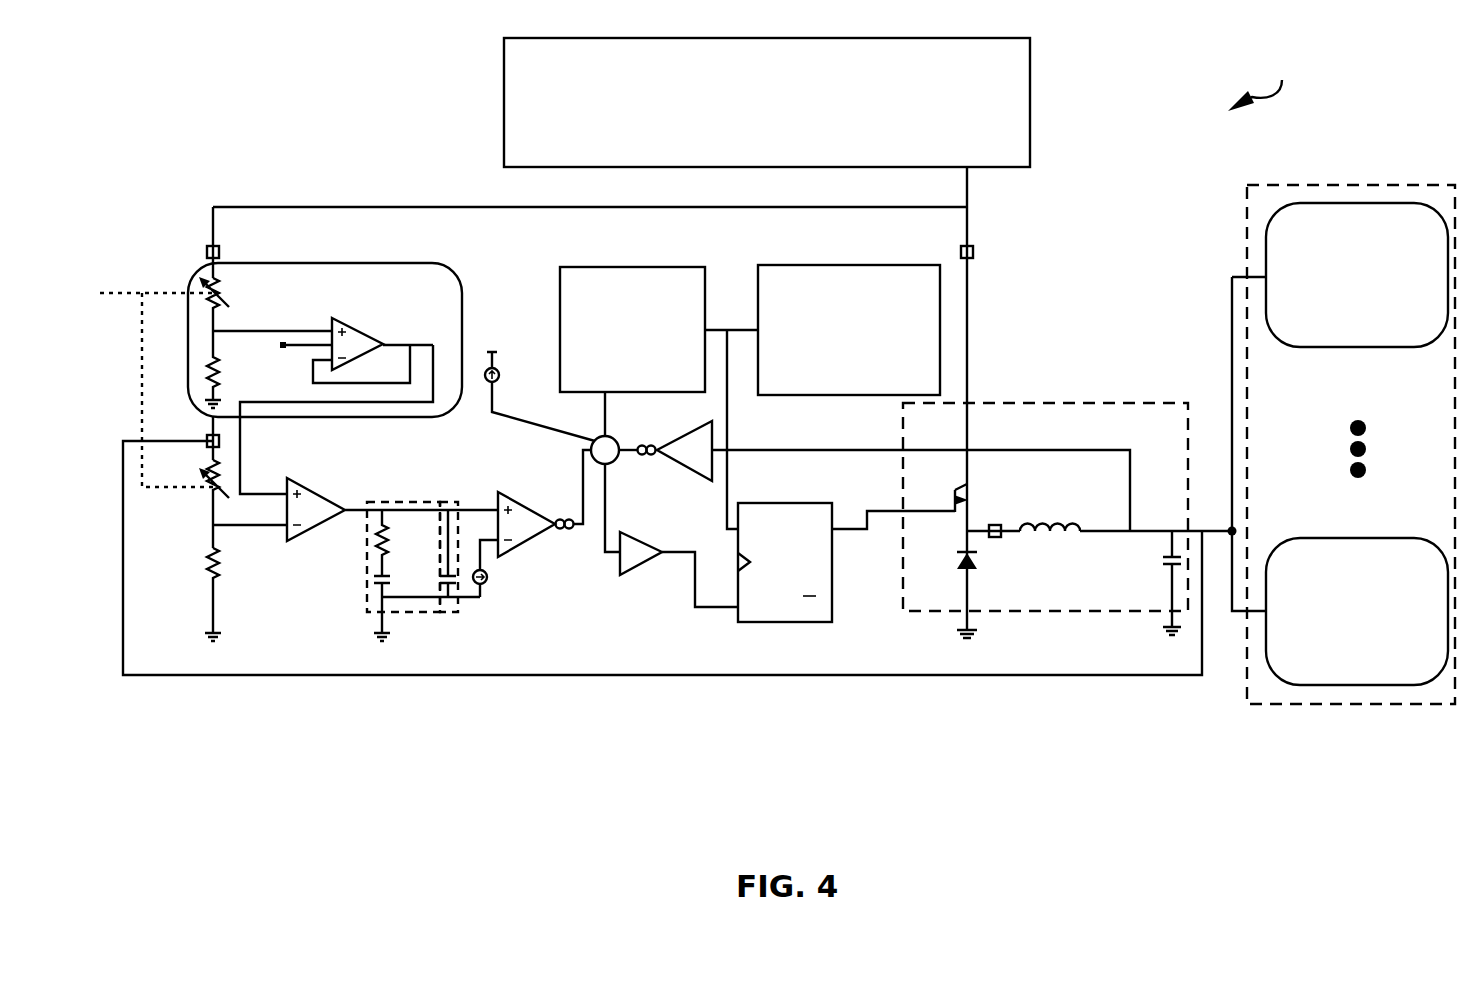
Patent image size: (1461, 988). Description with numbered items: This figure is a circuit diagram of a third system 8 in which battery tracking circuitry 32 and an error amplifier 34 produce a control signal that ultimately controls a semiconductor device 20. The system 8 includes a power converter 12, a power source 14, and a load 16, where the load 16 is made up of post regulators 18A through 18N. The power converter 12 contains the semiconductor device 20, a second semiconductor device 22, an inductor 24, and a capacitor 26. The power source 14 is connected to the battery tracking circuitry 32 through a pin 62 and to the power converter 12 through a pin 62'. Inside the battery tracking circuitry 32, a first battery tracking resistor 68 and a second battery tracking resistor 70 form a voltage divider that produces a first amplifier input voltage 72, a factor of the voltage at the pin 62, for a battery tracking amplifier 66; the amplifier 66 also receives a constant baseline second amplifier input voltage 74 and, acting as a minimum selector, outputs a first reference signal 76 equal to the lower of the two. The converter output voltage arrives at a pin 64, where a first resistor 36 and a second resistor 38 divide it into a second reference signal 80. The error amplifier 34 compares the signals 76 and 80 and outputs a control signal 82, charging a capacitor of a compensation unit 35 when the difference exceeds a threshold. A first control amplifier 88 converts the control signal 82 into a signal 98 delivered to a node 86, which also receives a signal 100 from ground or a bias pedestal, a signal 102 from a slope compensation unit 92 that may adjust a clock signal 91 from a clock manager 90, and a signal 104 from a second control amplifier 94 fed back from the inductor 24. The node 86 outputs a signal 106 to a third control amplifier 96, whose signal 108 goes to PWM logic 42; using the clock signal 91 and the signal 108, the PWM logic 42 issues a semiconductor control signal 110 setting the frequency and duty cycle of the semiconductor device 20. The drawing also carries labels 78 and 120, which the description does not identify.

The system 8 is at (1261, 83).
The power converter 12 is at (1057, 403).
The power source 14 is at (755, 128).
The load 16 is at (1392, 187).
The post regulator 18A is at (1338, 315).
The post regulator 18N is at (1338, 653).
The semiconductor device 20 is at (956, 493).
The semiconductor device 22 is at (960, 562).
The inductor 24 is at (1058, 530).
The capacitor 26 is at (1164, 558).
The battery tracking circuitry 32 is at (318, 263).
The error amplifier 34 is at (315, 495).
The compensation unit 35 is at (432, 504).
The first resistor 36 is at (207, 476).
The second resistor 38 is at (207, 556).
The pulse wave modulator (PWM) logic 42 is at (745, 503).
The pin 62 is at (238, 242).
The pin 62' is at (620, 328).
The pin 64 is at (207, 437).
The battery tracking amplifier 66 is at (362, 326).
The first battery tracking resistor 68 is at (224, 291).
The second battery tracking resistor 70 is at (217, 363).
The first amplifier input voltage 72 is at (250, 330).
The second amplifier input voltage 74 is at (290, 350).
The first reference signal 76 is at (252, 403).
The controller 78 is at (113, 292).
The second reference signal 80 is at (285, 523).
The control signal 82 is at (372, 508).
The node 86 is at (597, 437).
The first control amplifier 88 is at (532, 511).
The clock manager 90 is at (837, 371).
The clock signal 91 is at (750, 330).
The slope compensation unit 92 is at (621, 371).
The second control amplifier 94 is at (705, 430).
The third control amplifier 96 is at (645, 537).
The signal 98 is at (582, 471).
The signal 100 is at (495, 412).
The signal 102 is at (612, 434).
The signal 104 is at (640, 448).
The signal 106 is at (612, 504).
The signal 108 is at (694, 600).
The semiconductor control signal 110 is at (880, 510).
The output node 120 is at (1180, 530).